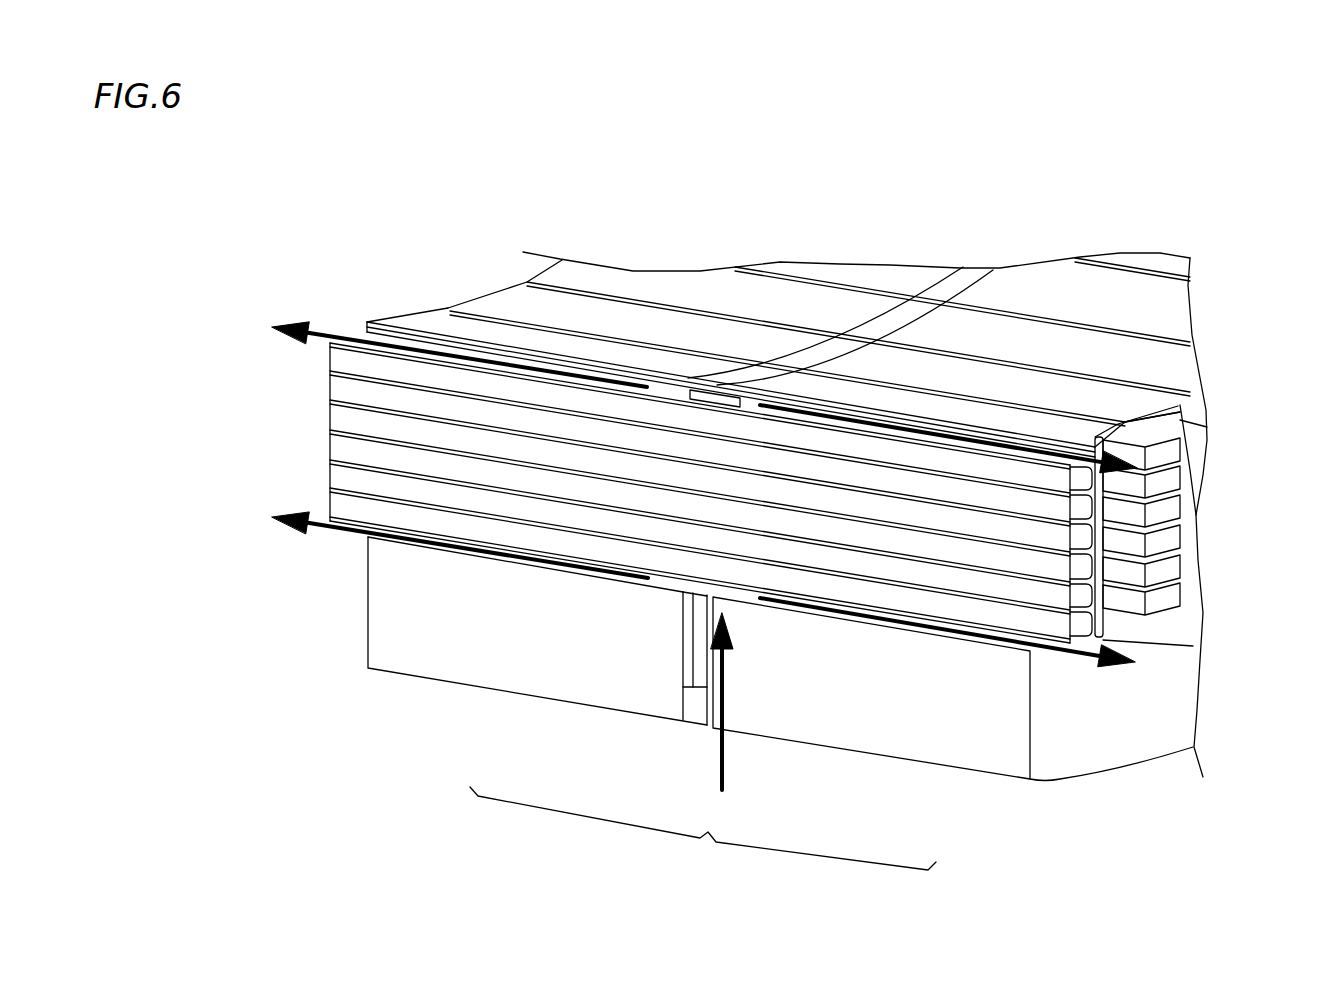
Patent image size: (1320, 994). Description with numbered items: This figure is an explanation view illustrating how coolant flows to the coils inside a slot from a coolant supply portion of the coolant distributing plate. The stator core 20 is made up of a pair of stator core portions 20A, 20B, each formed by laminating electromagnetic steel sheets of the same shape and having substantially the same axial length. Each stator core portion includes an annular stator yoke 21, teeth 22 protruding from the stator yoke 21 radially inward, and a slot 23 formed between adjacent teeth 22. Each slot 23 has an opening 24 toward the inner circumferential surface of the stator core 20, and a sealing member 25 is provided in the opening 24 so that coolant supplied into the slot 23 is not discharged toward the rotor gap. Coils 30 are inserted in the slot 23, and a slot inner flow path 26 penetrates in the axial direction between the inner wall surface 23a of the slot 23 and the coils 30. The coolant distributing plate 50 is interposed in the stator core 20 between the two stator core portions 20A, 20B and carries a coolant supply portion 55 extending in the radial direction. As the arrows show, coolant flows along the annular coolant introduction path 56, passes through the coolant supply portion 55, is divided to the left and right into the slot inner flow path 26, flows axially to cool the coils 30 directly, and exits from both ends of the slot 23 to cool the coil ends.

The stator core 20 is at (703, 828).
The stator core portion 20A is at (557, 702).
The stator core portion 20B is at (912, 762).
The stator yoke 21 is at (1127, 743).
The teeth 22 is at (1205, 447).
The slot 23 is at (1163, 437).
The inner wall surface of the slot 23a is at (1030, 520).
The opening 24 is at (990, 400).
The sealing member 25 is at (1130, 428).
The slot inner flow path 26 is at (1130, 632).
The coils 30 is at (1167, 553).
The coolant distributing plate 50 is at (927, 283).
The coolant supply portion 55 is at (698, 648).
The annular coolant introduction path 56 is at (698, 703).